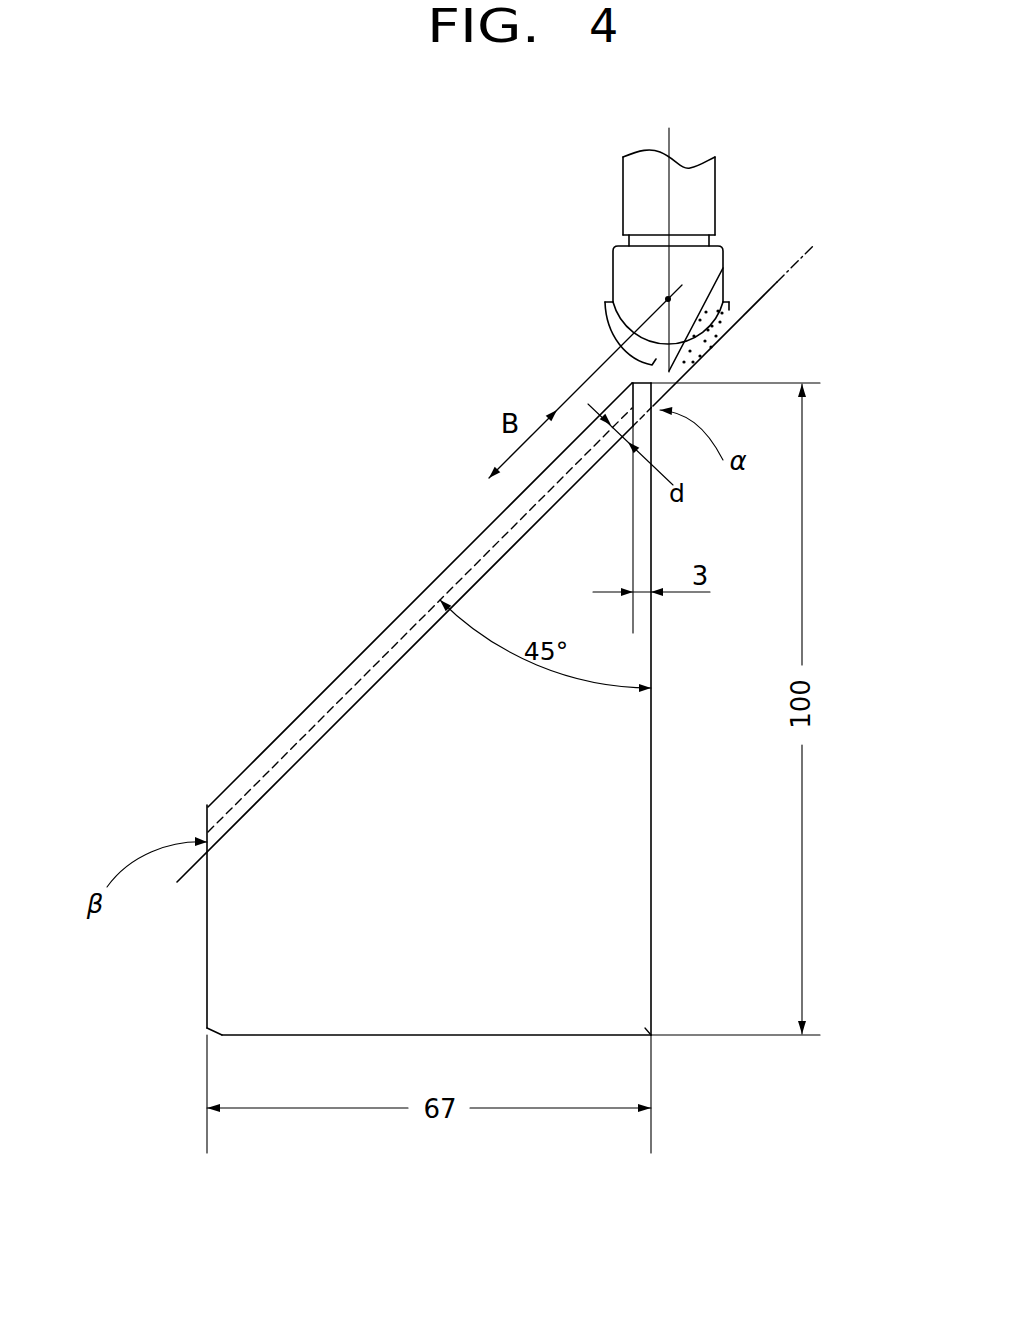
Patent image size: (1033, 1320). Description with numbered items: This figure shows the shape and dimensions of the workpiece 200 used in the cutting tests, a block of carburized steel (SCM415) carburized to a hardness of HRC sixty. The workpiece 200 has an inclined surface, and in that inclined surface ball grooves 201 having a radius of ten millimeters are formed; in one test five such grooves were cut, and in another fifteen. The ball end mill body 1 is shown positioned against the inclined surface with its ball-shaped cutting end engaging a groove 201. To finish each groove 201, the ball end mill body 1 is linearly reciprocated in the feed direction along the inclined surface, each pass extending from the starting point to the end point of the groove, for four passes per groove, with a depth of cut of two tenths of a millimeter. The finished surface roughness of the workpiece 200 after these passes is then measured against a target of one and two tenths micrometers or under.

The ball end mill body 1 is at (642, 192).
The workpiece 200 is at (597, 928).
The ball groove 201 is at (345, 682).